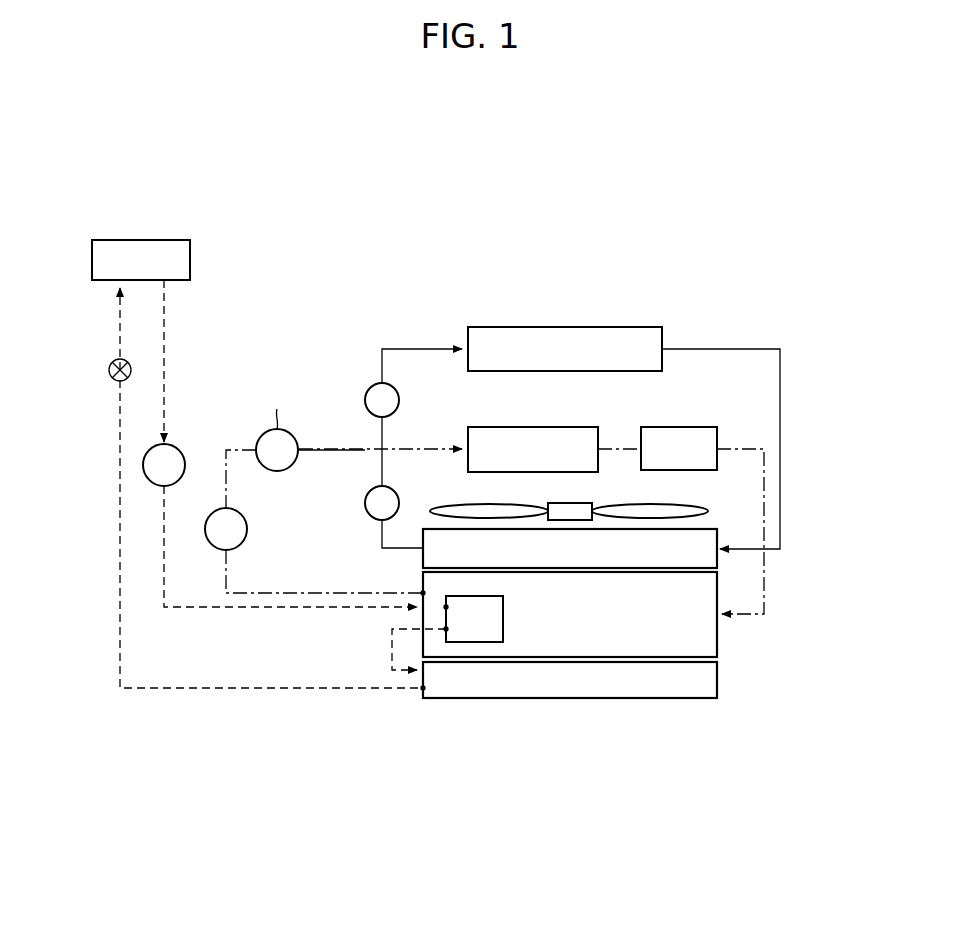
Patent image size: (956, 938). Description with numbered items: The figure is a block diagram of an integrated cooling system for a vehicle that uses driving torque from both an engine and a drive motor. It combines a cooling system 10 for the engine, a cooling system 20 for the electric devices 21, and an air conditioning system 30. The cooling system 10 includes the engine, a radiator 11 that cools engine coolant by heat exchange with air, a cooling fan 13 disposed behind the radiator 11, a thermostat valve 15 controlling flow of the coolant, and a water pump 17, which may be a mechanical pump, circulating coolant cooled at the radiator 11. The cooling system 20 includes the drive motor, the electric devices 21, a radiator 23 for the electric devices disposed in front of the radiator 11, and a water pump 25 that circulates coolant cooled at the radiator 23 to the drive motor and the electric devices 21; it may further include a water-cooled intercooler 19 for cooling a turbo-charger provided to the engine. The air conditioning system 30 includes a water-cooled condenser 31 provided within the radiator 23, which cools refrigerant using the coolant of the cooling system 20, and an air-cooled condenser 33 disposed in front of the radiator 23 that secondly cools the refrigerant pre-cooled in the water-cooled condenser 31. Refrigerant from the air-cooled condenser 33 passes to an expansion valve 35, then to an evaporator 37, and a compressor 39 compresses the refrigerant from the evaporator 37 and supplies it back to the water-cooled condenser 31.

The cooling system for an engine 10 is at (712, 322).
The radiator for the engine 11 is at (717, 560).
The cooling fan 13 is at (592, 505).
The thermostat valve 15 is at (365, 503).
The water pump for the engine 17 is at (368, 388).
The water-cooled intercooler 19 is at (533, 427).
The cooling system for electric devices 20 is at (242, 417).
The electric devices 21 is at (681, 427).
The radiator for electric devices 23 is at (717, 635).
The water pump for electric devices 25 is at (247, 532).
The air conditioning system 30 is at (216, 745).
The water-cooled condenser 31 is at (478, 642).
The air-cooled condenser 33 is at (717, 676).
The expansion valve 35 is at (109, 370).
The evaporator 37 is at (141, 240).
The compressor 39 is at (180, 450).